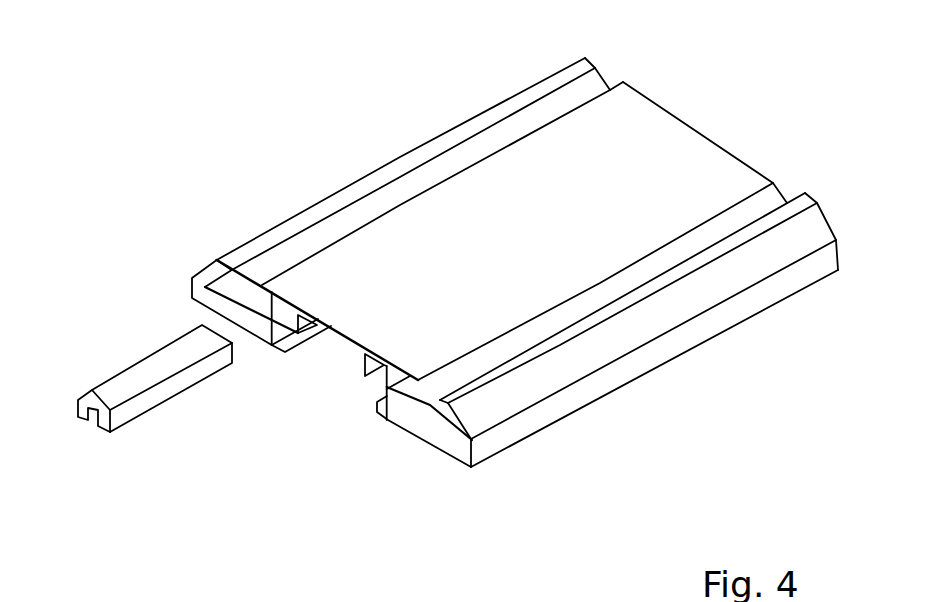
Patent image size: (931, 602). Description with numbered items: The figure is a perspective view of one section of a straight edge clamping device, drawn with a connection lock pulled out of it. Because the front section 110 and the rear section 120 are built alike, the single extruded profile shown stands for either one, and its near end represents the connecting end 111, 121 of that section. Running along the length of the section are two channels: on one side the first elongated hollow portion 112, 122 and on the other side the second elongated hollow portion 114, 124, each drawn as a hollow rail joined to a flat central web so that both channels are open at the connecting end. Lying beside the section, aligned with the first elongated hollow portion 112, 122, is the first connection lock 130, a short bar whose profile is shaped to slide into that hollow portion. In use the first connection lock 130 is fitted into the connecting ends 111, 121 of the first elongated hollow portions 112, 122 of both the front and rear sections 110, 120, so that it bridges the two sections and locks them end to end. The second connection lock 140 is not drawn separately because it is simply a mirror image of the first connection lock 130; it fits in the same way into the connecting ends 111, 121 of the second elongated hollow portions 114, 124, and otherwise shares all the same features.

The front section 110 is at (478, 296).
The rear section 120 is at (478, 296).
The connecting end 111 is at (502, 292).
The connecting end 121 is at (312, 408).
The first elongated hollow portion 112 is at (364, 284).
The first elongated hollow portion 122 is at (266, 320).
The second elongated hollow portion 114 is at (601, 386).
The second elongated hollow portion 124 is at (436, 430).
The first connection lock 130 is at (141, 349).
The second connection lock 140 is at (115, 387).